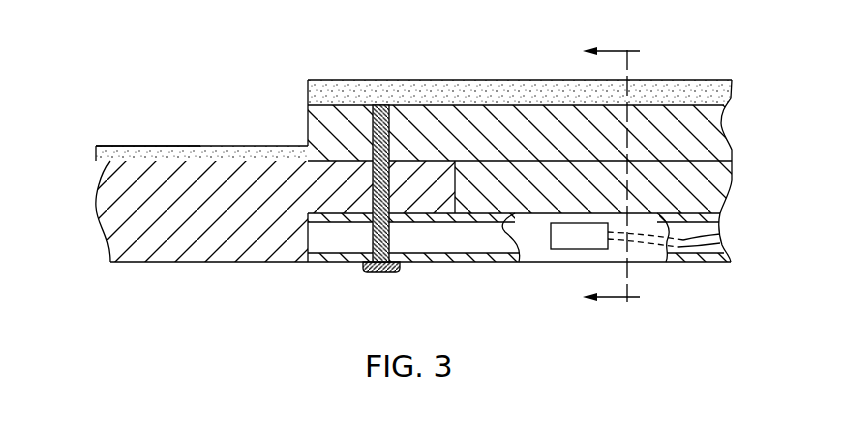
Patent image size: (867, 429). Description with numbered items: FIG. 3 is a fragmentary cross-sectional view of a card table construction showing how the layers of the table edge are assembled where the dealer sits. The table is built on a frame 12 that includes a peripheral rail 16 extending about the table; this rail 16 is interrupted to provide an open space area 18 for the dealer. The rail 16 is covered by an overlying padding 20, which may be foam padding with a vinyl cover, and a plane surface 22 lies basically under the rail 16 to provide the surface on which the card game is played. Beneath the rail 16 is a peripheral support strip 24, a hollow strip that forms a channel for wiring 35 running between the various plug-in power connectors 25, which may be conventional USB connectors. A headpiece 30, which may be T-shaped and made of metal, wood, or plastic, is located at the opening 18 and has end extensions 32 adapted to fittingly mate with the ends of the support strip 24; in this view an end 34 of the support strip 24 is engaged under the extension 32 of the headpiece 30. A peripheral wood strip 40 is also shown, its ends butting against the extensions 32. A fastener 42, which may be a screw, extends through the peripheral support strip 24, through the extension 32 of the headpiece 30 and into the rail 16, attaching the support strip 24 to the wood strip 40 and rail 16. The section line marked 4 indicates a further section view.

The frame 12 is at (738, 144).
The peripheral rail 16 is at (527, 122).
The open space area 18 is at (139, 128).
The padding 20 is at (345, 92).
The plane surface 22 is at (183, 147).
The peripheral support strip 24 is at (449, 270).
The power connector 25 is at (592, 243).
The headpiece 30 is at (205, 215).
The end extension 32 is at (425, 180).
The end of support strip 34 is at (340, 258).
The wiring 35 is at (688, 242).
The peripheral wood strip 40 is at (711, 197).
The fastener 42 is at (387, 235).
The section line 4- 4 is at (618, 174).